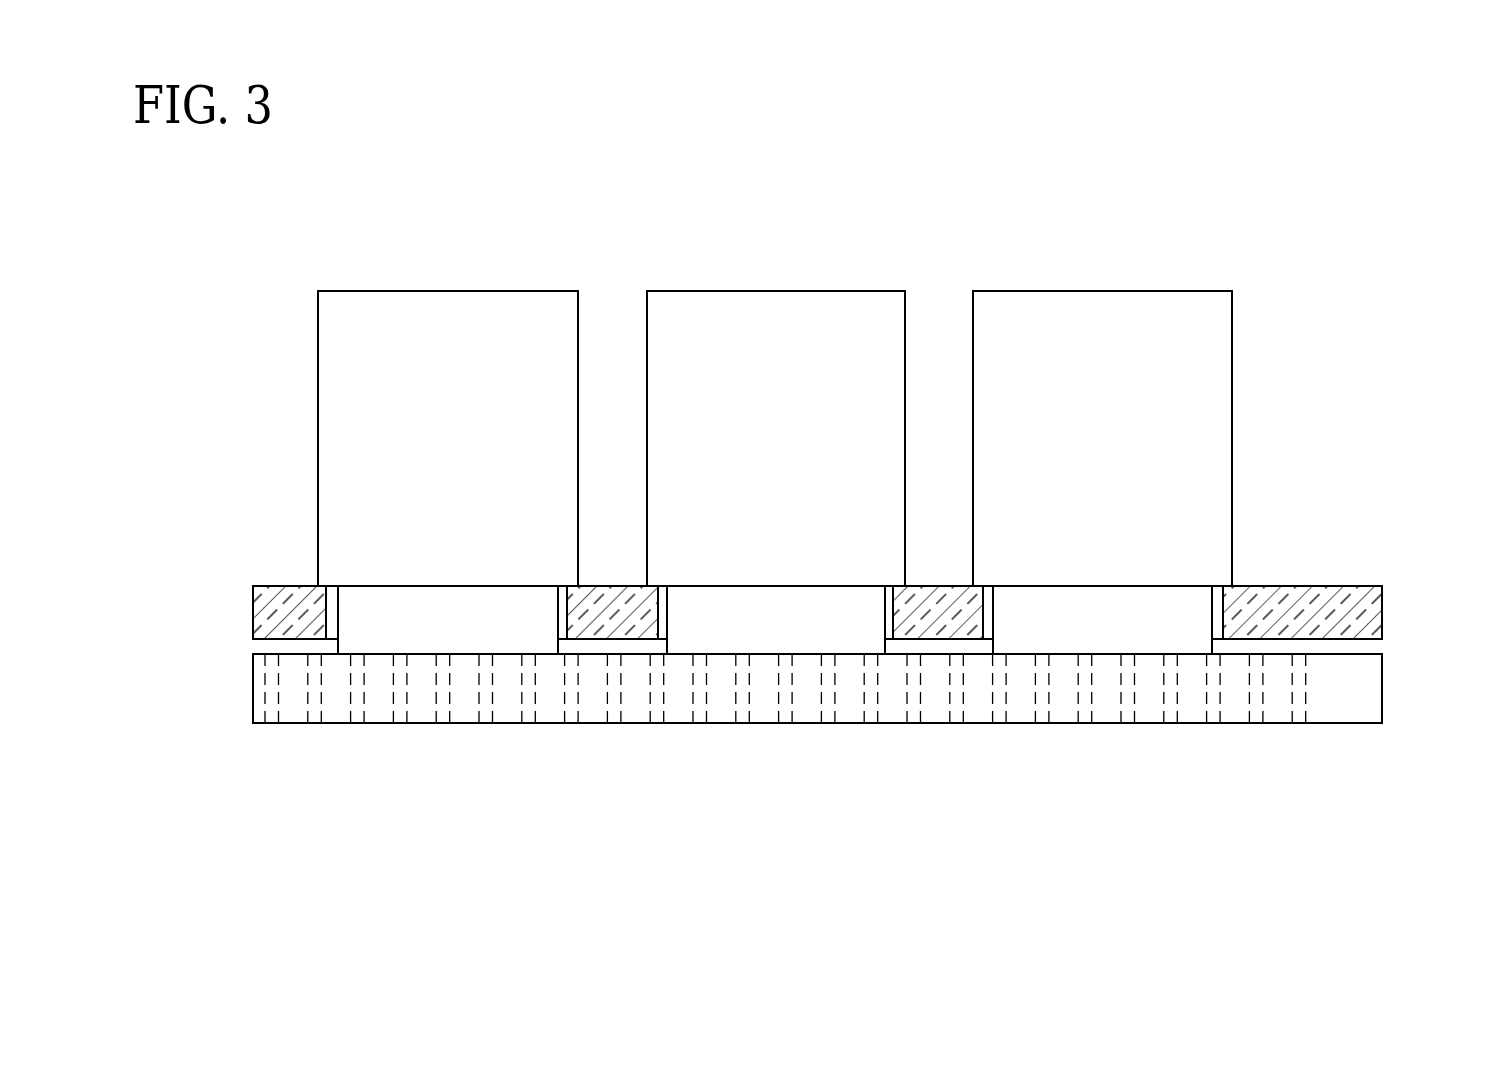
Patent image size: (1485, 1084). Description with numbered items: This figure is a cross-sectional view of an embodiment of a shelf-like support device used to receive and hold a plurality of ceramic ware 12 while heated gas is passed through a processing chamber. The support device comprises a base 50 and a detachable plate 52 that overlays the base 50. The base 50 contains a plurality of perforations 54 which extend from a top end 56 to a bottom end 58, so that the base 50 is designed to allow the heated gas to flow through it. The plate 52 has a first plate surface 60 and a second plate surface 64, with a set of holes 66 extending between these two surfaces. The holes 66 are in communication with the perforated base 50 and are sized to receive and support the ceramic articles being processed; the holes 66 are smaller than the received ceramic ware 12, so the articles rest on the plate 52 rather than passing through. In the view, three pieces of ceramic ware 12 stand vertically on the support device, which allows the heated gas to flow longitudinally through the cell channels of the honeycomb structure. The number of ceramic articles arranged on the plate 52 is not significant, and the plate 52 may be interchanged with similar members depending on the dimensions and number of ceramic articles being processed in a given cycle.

The ceramic ware 12 is at (695, 291).
The base 50 is at (1367, 698).
The detachable plate 52 is at (1367, 623).
The perforations 54 is at (357, 723).
The top end 56 is at (1268, 655).
The bottom end 58 is at (252, 723).
The first plate surface 60 is at (255, 585).
The second plate surface 64 is at (317, 640).
The holes 66 is at (563, 615).